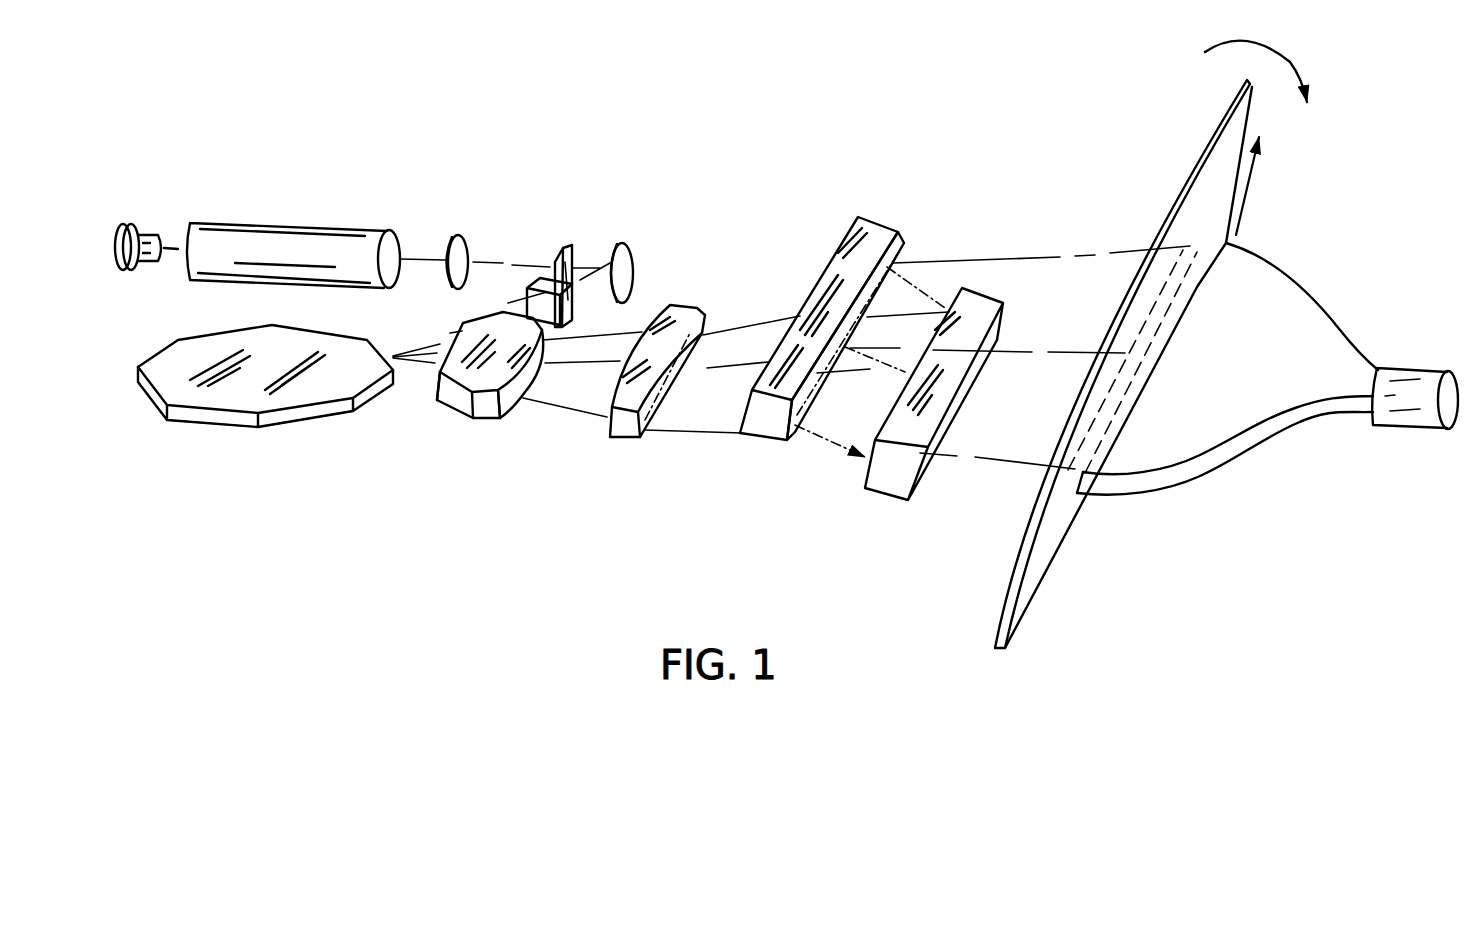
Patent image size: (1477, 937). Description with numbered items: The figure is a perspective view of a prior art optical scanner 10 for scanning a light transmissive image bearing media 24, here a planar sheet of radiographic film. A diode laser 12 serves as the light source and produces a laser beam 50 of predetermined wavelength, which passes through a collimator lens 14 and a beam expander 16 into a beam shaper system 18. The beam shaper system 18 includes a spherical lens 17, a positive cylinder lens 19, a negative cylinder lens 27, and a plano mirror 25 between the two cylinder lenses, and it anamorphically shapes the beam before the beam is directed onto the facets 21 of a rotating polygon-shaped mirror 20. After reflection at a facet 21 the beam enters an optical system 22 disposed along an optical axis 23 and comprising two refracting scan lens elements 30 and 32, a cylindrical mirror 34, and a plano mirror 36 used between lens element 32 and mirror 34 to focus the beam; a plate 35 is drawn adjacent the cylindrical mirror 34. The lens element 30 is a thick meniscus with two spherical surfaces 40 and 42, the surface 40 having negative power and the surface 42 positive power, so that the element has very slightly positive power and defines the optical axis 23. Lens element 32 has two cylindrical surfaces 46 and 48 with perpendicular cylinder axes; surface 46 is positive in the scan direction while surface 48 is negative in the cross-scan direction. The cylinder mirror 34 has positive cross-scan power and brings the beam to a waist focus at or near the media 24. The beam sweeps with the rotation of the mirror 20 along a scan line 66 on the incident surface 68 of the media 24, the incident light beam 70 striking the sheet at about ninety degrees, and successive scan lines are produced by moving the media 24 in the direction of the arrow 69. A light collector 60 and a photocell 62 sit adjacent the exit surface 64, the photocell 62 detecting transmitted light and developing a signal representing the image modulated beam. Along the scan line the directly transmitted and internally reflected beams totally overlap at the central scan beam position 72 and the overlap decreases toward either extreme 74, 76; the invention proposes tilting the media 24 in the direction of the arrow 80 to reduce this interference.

The optical scanner 10 is at (985, 140).
The diode laser 12 is at (128, 228).
The collimator lens 14 is at (160, 232).
The beam expander 16 is at (323, 223).
The spherical lens 17 is at (470, 237).
The beam shaper system 18 is at (573, 232).
The positive cylinder lens 19 is at (577, 256).
The rotating polygon-shaped mirror 20 is at (233, 437).
The facets 21 is at (302, 428).
The optical system 22 is at (563, 550).
The optical axis 23 is at (587, 367).
The image bearing media 24 is at (1097, 364).
The plano mirror 25 is at (633, 263).
The negative cylinder lens 27 is at (527, 293).
The first refracting scan lens element 30 is at (470, 433).
The second refracting scan lens element 32 is at (637, 463).
The cylindrical mirror 34 is at (780, 490).
The plate 35 is at (788, 450).
The plano mirror 36 is at (893, 488).
The spherical surface 40 is at (433, 402).
The spherical surface 42 is at (507, 408).
The cylindrical surface 46 is at (612, 437).
The cylindrical surface 48 is at (645, 436).
The laser beam 50 is at (168, 250).
The light collector 60 is at (1193, 470).
The photocell 62 is at (1425, 430).
The exit surface 64 is at (1055, 543).
The scan line 66 is at (1140, 330).
The incident surface 68 is at (1028, 522).
The arrow 69 is at (1252, 184).
The incident light beam 70 is at (1053, 228).
The central scan beam position 72 is at (1035, 353).
The scan line extreme 74 is at (1050, 262).
The scan line extreme 76 is at (975, 458).
The arrow 80 is at (1292, 57).